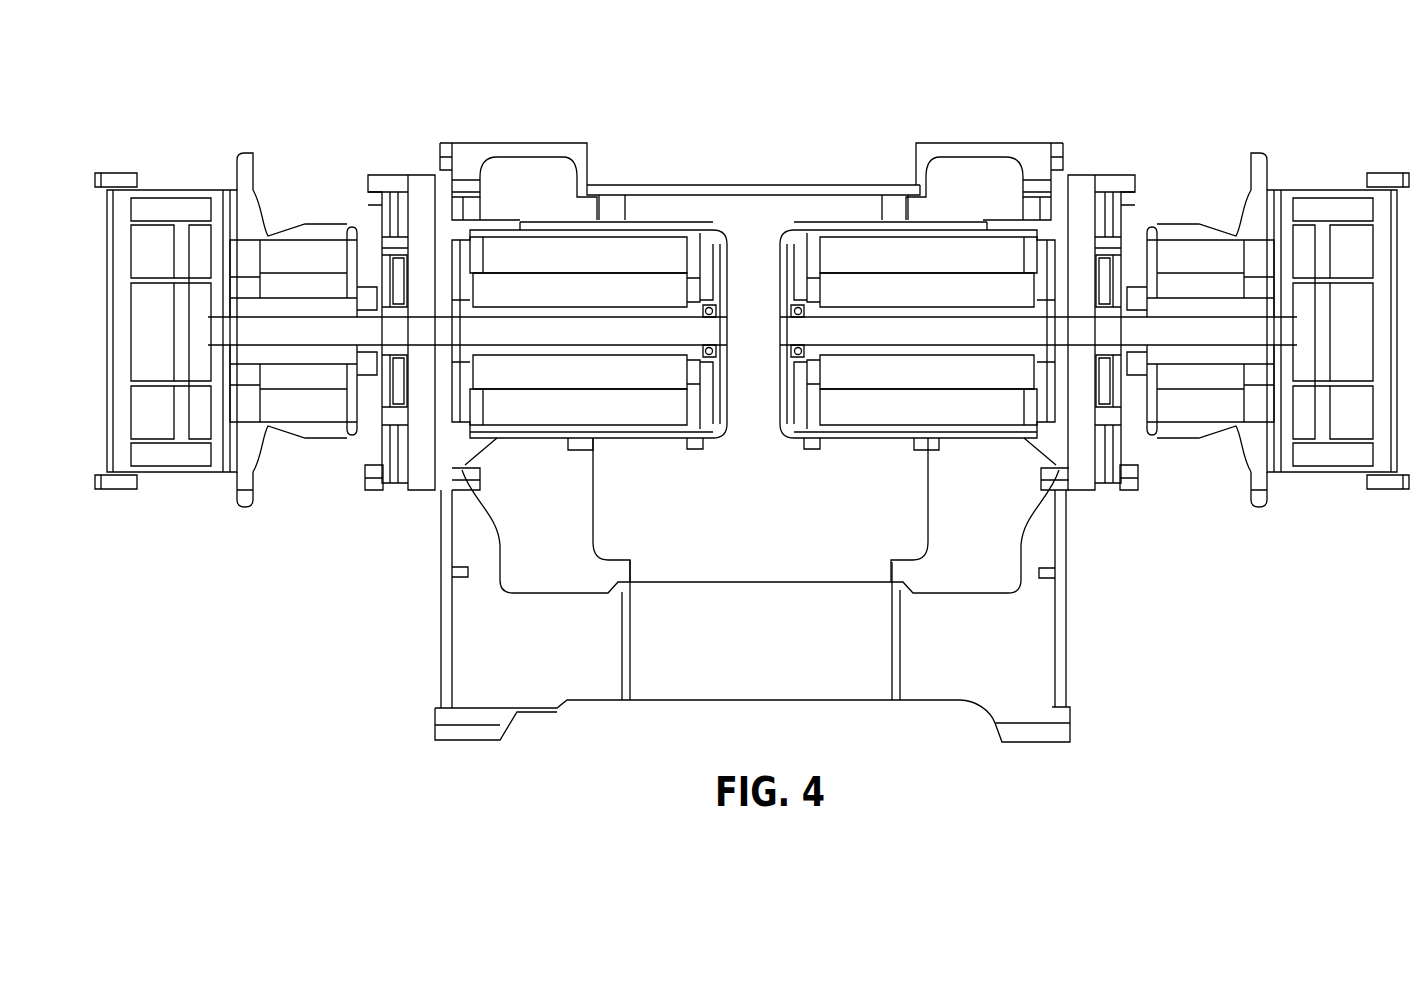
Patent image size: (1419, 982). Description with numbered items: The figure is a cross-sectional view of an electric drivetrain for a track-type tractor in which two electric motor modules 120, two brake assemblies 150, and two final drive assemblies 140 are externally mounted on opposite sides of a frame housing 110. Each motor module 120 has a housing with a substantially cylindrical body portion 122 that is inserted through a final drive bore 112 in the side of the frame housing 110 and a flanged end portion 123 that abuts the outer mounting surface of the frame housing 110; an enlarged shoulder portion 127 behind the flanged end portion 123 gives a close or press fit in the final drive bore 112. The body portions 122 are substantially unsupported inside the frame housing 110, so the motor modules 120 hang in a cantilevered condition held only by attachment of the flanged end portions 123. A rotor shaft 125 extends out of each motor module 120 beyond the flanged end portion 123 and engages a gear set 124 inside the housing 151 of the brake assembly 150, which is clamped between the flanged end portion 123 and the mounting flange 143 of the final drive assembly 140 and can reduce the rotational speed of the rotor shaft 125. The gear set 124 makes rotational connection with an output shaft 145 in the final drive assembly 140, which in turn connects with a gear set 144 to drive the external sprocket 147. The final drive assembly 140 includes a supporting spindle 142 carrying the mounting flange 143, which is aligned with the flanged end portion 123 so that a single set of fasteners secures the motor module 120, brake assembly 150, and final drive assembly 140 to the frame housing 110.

The frame housing 110 is at (896, 188).
The final drive bore 112 is at (458, 488).
The electric motor module 120 is at (570, 448).
The body portion 122 is at (567, 238).
The flanged end portion 123 is at (446, 163).
The gear set 124 is at (397, 290).
The rotor shaft 125 is at (480, 337).
The enlarged shoulder portion 127 is at (460, 207).
The final drive assembly 140 is at (210, 503).
The supporting spindle 142 is at (320, 297).
The mounting flange 143 is at (375, 477).
The gear set 144 is at (152, 418).
The output shaft 145 is at (260, 330).
The external sprocket 147 is at (246, 153).
The brake assembly 150 is at (418, 495).
The housing 151 is at (413, 178).